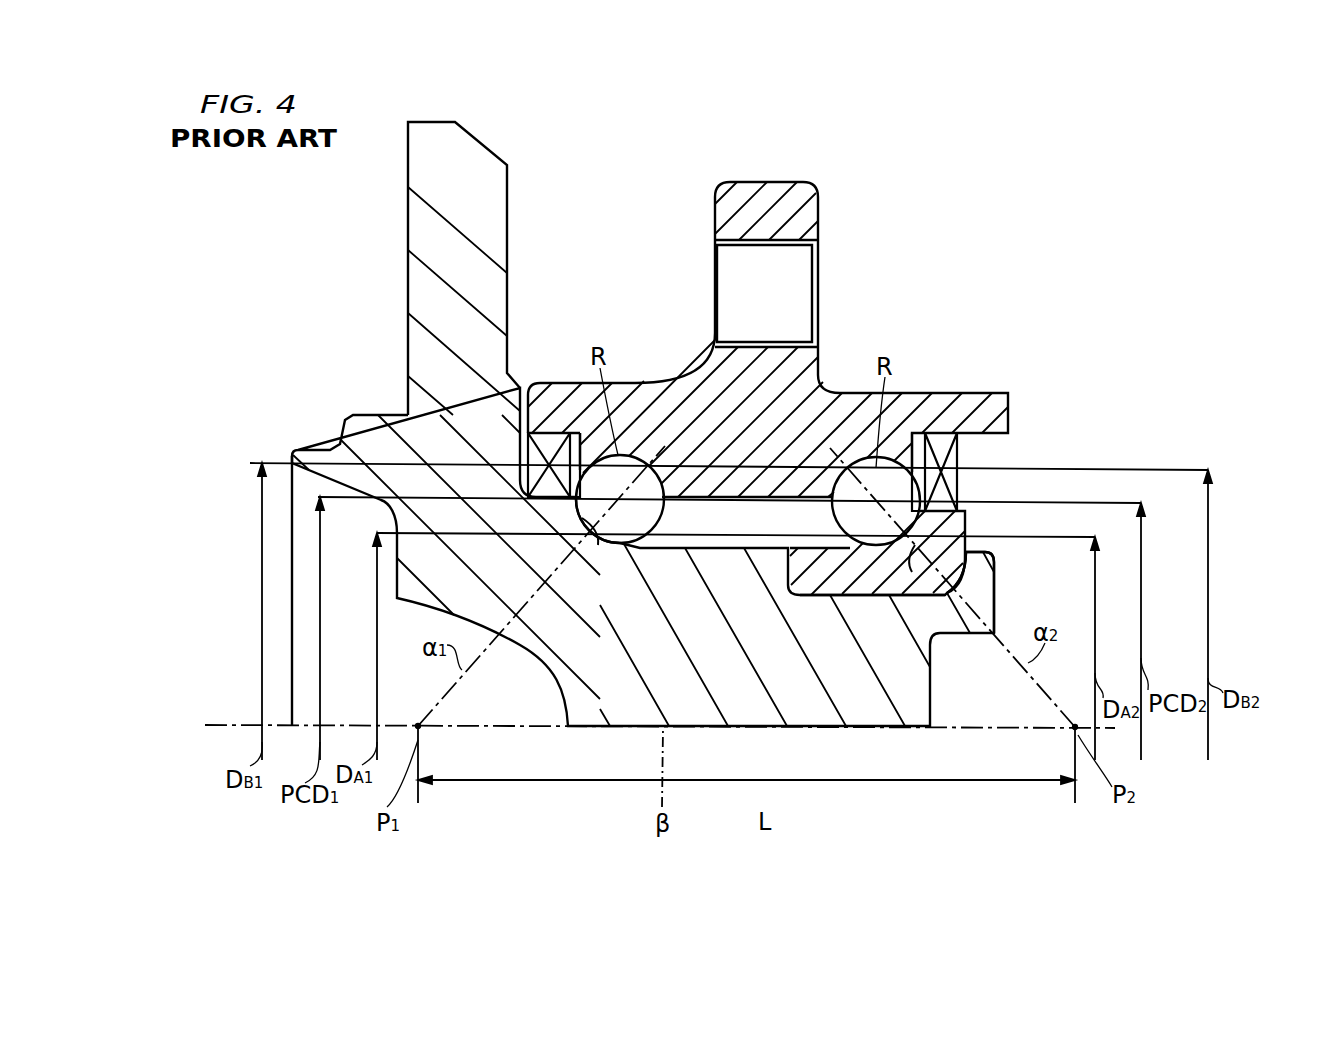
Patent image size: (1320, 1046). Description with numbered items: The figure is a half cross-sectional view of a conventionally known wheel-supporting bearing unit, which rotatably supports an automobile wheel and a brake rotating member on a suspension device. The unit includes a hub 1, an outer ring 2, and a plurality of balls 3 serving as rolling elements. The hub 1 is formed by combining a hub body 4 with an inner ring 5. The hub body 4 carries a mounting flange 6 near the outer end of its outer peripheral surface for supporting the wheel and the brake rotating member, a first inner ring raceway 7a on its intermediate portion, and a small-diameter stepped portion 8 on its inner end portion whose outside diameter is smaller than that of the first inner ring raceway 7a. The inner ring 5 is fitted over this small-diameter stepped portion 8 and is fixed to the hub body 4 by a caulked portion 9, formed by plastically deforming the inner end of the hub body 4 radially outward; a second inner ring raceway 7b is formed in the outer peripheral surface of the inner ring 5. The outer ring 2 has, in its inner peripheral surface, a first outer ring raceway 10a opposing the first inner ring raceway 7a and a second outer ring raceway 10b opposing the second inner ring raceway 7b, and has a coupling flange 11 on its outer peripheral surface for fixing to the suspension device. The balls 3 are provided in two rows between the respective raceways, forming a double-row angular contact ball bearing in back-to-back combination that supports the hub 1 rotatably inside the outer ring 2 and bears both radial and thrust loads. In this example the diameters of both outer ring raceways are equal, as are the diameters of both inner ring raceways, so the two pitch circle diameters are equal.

The hub 1 is at (596, 664).
The outer ring 2 is at (704, 391).
The balls 3 is at (560, 430).
The hub body 4 is at (432, 486).
The inner ring 5 is at (965, 545).
The mounting flange 6 is at (422, 212).
The first inner ring raceway 7a is at (585, 550).
The second inner ring raceway 7b is at (932, 634).
The small-diameter stepped portion 8 is at (843, 597).
The caulked portion 9 is at (975, 582).
The first outer ring raceway 10a is at (632, 468).
The second outer ring raceway 10b is at (860, 472).
The coupling flange 11 is at (818, 212).